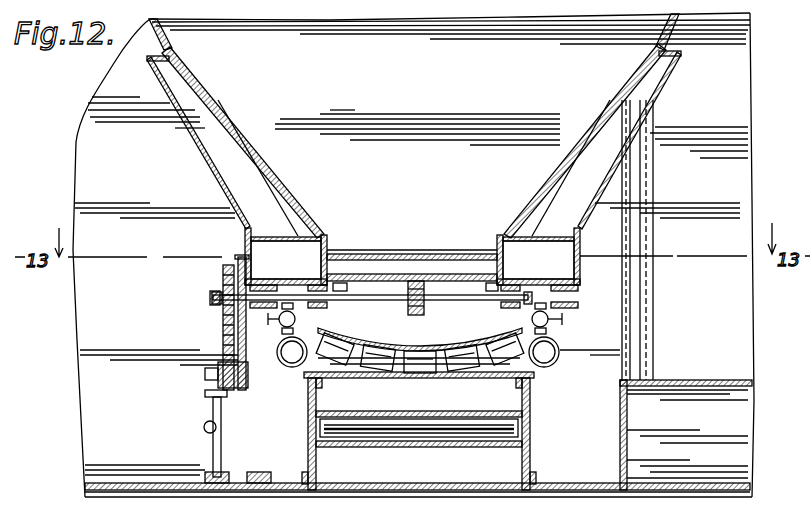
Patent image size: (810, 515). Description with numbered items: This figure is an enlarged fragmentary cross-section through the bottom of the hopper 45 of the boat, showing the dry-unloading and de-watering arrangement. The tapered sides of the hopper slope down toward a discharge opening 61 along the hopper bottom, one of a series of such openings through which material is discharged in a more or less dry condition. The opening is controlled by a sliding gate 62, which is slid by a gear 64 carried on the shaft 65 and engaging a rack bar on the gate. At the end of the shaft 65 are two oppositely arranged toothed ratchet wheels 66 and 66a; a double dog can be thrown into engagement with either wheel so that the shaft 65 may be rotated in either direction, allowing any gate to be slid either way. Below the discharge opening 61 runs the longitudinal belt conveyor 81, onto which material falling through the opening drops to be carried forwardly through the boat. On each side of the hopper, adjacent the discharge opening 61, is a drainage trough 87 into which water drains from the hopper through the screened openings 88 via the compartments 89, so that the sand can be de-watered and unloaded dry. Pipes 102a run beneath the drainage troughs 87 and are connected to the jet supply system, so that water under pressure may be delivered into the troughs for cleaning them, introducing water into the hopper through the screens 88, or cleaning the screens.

The hopper 45 is at (413, 111).
The discharge opening 61 is at (418, 247).
The sliding gate 62 is at (359, 274).
The gear 64 is at (418, 316).
The shaft 65 is at (433, 296).
The toothed ratchet wheel 66 is at (232, 262).
The toothed ratchet wheel 66a is at (226, 285).
The longitudinal belt conveyor 81 is at (390, 342).
The drainage trough 87 is at (303, 261).
The screened opening 88 is at (262, 127).
The compartment 89 is at (272, 185).
The pipe 102a is at (562, 372).